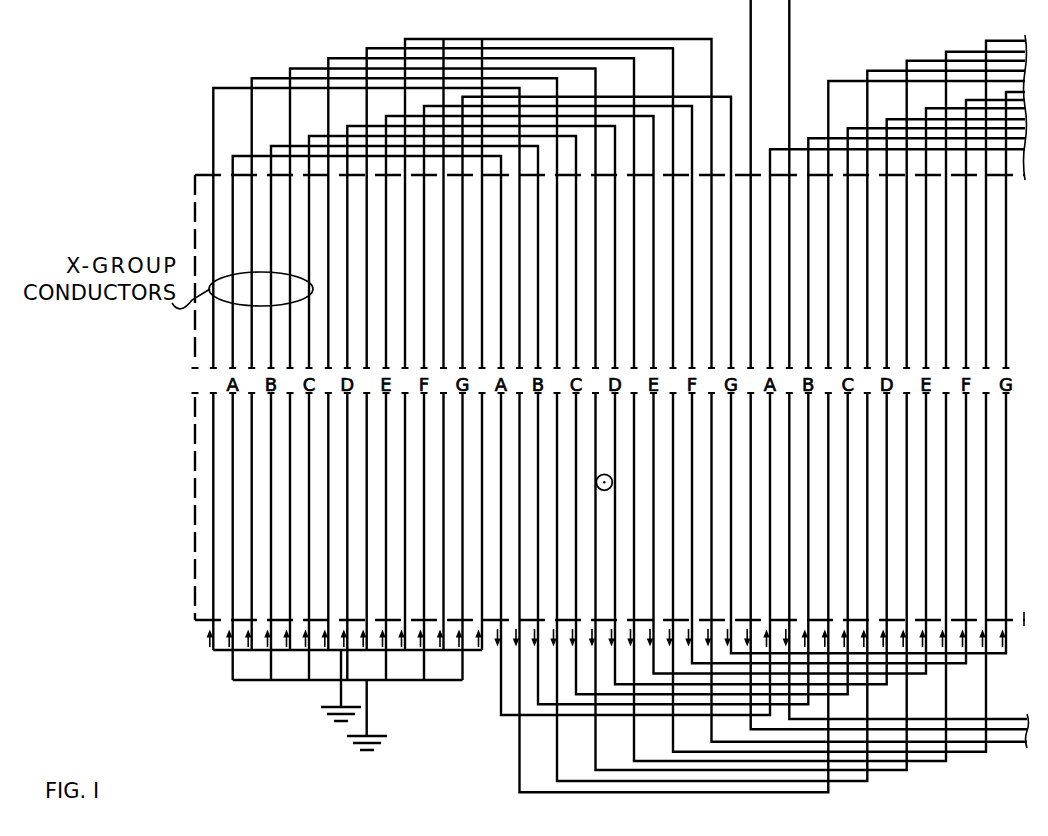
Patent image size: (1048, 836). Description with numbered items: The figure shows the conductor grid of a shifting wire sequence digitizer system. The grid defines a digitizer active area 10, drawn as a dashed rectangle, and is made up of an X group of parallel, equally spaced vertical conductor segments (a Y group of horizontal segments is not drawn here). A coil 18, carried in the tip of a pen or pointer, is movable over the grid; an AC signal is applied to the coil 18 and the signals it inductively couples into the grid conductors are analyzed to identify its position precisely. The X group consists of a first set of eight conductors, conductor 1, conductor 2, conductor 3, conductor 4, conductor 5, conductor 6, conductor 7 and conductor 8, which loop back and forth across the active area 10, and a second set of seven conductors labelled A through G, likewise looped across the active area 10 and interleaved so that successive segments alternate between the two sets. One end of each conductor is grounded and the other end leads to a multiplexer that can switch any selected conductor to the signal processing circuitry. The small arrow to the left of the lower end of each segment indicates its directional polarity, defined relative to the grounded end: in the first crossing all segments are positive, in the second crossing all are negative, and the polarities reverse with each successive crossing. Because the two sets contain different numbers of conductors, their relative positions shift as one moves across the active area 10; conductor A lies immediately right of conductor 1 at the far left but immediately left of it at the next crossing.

The digitizer active area 10 is at (195, 550).
The coil 18 is at (612, 482).
The conductor 1 is at (521, 440).
The conductor 2 is at (559, 429).
The conductor 3 is at (598, 420).
The conductor 4 is at (637, 409).
The conductor 5 is at (676, 399).
The conductor 6 is at (713, 390).
The conductor 7 is at (732, 364).
The conductor 8 is at (751, 359).